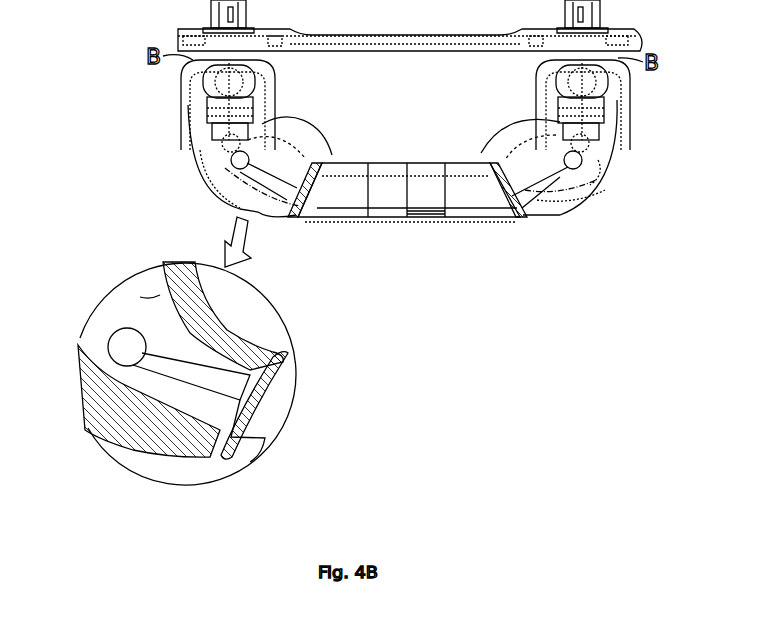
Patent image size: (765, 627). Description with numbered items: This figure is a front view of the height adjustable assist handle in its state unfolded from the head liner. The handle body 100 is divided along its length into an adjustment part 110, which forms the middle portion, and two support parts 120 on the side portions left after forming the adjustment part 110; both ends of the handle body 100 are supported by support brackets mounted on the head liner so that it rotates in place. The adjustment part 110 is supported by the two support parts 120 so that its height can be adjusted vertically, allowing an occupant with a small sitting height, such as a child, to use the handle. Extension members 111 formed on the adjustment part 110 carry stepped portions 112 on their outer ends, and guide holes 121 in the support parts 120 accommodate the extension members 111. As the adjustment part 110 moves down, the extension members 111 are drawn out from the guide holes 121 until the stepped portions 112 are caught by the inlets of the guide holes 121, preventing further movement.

The handle body 100 is at (479, 272).
The adjustment part 110 is at (385, 220).
The extension member 111 is at (272, 165).
The stepped portion 112 is at (243, 151).
The support part 120 is at (197, 177).
The guide hole 121 is at (140, 297).